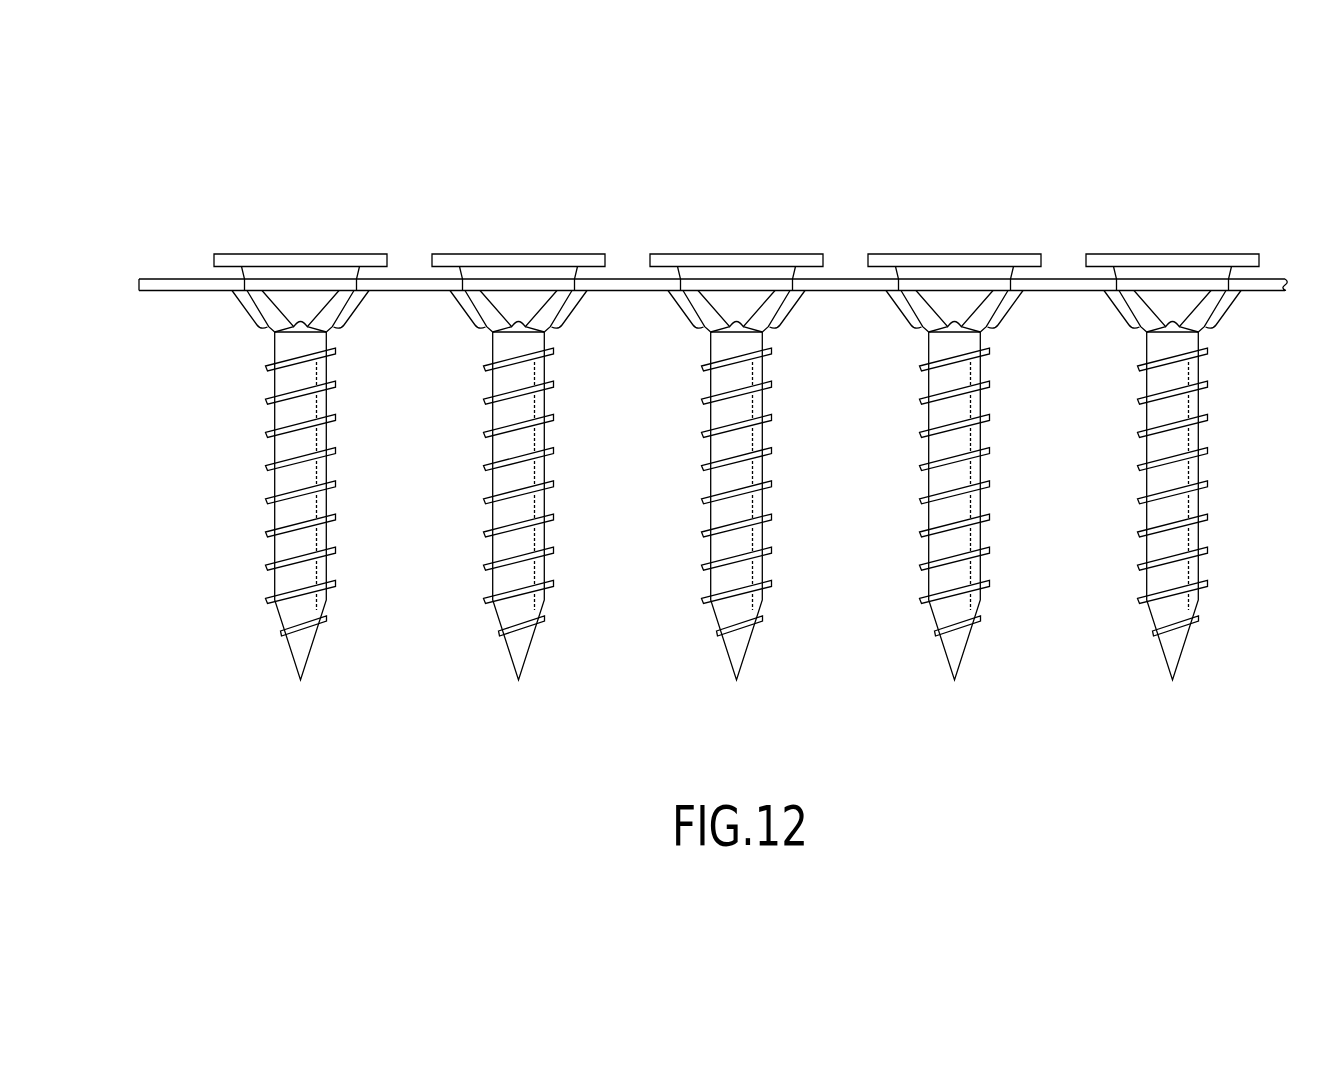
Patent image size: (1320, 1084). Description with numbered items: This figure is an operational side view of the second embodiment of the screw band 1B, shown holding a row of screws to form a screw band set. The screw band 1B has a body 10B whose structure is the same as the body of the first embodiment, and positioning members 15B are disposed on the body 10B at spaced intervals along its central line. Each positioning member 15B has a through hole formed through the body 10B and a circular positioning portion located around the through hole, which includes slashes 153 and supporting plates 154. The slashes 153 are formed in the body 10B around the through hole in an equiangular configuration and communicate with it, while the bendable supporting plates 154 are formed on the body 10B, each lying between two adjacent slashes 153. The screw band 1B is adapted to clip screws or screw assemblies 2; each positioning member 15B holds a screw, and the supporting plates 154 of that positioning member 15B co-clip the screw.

The screw band 1B is at (843, 248).
The body 10B is at (413, 272).
The screw assembly 2 is at (305, 228).
The positioning member 15B is at (239, 322).
The slash 153 is at (342, 321).
The supporting plate 154 is at (255, 339).